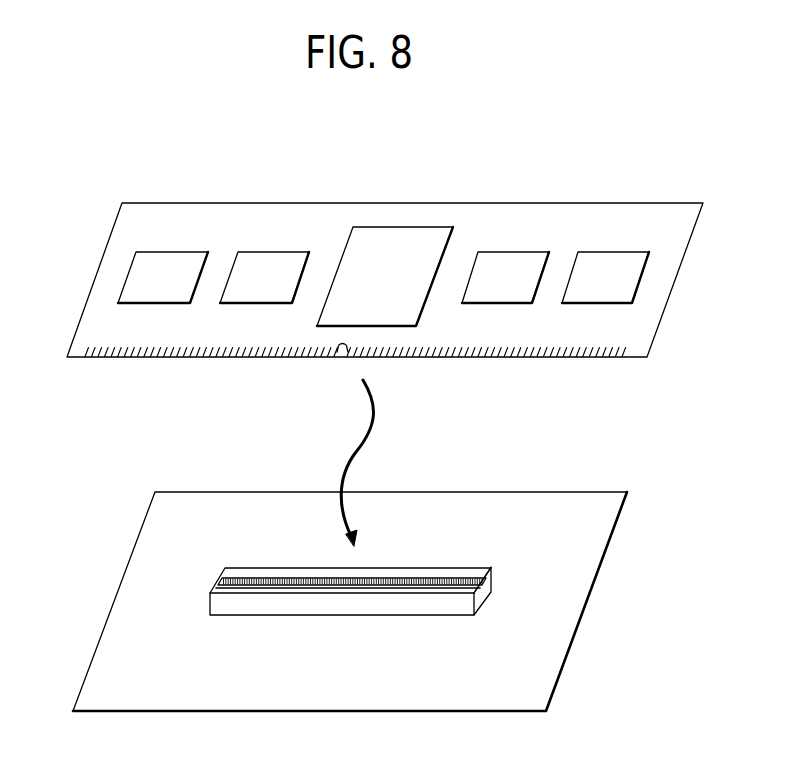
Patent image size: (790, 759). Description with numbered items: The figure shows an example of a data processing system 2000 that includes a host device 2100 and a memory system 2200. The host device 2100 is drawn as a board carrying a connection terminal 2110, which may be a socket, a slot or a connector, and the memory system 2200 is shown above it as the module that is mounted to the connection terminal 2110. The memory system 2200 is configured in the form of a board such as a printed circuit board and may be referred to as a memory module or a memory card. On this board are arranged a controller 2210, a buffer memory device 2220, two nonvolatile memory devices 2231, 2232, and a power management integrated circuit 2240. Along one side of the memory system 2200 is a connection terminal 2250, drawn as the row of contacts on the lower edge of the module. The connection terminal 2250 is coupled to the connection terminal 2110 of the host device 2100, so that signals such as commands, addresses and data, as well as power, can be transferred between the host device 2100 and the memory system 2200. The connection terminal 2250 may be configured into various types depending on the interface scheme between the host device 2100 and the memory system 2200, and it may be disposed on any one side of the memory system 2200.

The data processing system 2000 is at (77, 170).
The host device 2100 is at (350, 601).
The connection terminal 2110 is at (494, 573).
The memory system 2200 is at (385, 301).
The controller 2210 is at (385, 276).
The buffer memory device 2220 is at (264, 277).
The nonvolatile memory device 2231 is at (505, 277).
The nonvolatile memory device 2232 is at (605, 277).
The power management integrated circuit 2240 is at (163, 277).
The connection terminal 2250 is at (108, 357).